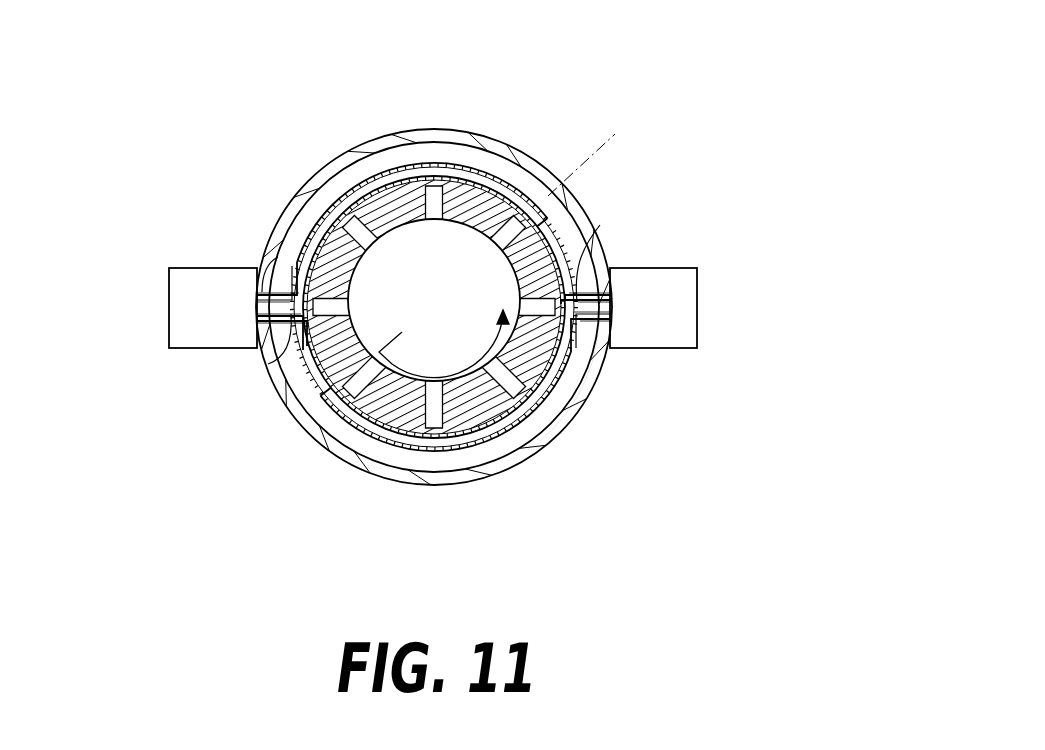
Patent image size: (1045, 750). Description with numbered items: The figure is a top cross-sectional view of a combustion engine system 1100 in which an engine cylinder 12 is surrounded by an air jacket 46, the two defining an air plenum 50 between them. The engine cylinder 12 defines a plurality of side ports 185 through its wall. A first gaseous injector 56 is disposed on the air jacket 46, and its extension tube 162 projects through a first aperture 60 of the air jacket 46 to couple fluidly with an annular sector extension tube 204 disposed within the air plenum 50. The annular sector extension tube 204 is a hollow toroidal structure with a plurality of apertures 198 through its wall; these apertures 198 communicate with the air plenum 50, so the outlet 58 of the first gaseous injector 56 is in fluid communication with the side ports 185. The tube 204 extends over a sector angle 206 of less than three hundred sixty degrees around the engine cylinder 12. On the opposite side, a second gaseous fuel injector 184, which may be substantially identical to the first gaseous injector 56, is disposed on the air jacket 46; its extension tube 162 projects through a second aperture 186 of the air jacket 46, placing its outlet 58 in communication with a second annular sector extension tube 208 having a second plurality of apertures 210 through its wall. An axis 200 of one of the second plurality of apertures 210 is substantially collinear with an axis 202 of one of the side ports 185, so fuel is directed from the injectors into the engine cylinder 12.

The combustion engine system 1100 is at (643, 61).
The axis 200 is at (537, 166).
The air jacket 46 is at (314, 438).
The plurality of apertures 198 is at (375, 437).
The air plenum 50 is at (272, 362).
The second annular sector extension tube 208 is at (497, 176).
The sector angle 206 is at (490, 440).
The engine cylinder 12 is at (312, 392).
The annular sector extension tube 204 is at (560, 380).
The side ports 185 is at (407, 195).
The second plurality of apertures 210 is at (360, 268).
The axis 202 is at (522, 308).
The extension tube 162 is at (262, 258).
The second aperture 186 is at (262, 268).
The first aperture 60 is at (605, 263).
The outlet 58 is at (305, 358).
The second gaseous fuel injector 184 is at (169, 304).
The first gaseous injector 56 is at (697, 287).